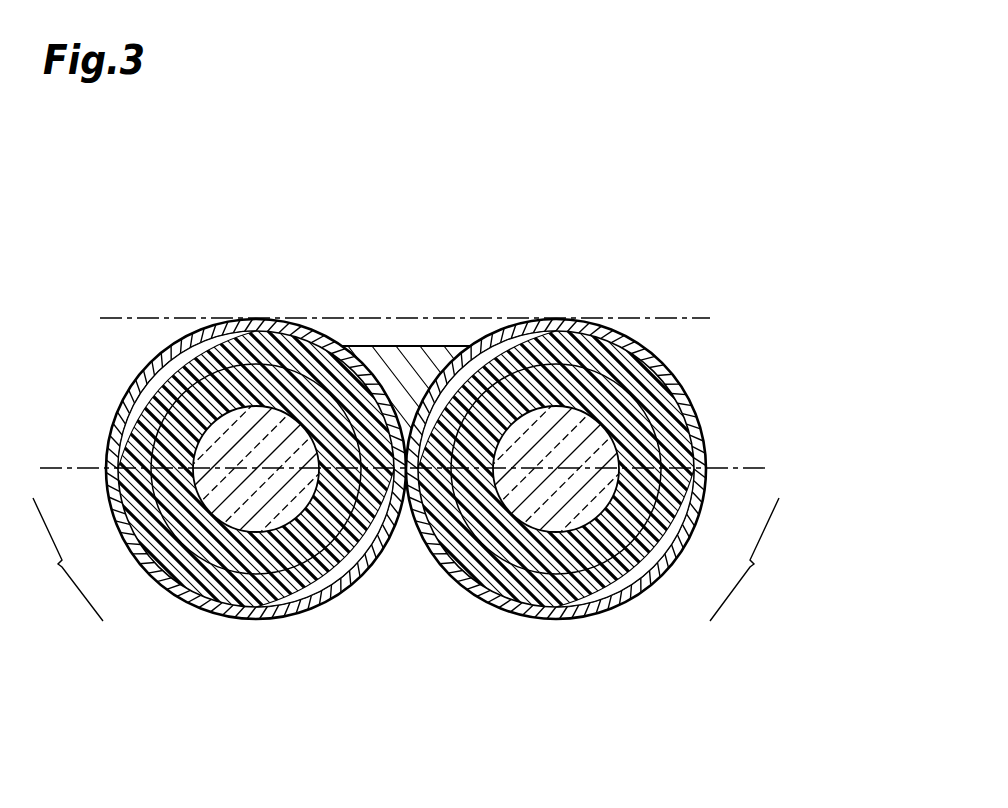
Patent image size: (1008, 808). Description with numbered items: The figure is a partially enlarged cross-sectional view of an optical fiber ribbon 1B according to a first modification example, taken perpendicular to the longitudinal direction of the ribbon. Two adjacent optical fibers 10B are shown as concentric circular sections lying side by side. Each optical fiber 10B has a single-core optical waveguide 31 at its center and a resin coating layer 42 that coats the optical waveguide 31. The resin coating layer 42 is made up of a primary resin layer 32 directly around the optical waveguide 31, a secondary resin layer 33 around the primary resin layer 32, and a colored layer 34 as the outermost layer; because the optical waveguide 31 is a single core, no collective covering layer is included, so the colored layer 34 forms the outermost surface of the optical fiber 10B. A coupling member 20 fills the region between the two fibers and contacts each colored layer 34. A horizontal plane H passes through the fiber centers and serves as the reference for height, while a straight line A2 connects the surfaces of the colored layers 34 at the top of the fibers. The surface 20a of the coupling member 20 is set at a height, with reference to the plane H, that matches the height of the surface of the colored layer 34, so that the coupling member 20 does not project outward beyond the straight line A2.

The optical fiber ribbon 1B is at (405, 411).
The optical fiber 10B is at (408, 493).
The coupling member 20 is at (406, 334).
The surface of the coupling member 20a is at (433, 347).
The optical waveguide 31 is at (243, 518).
The primary resin layer 32 is at (183, 540).
The secondary resin layer 33 is at (148, 502).
The colored layer 34 is at (112, 493).
The resin coating layer 42 is at (405, 559).
The straight line A2 is at (657, 318).
The plane H is at (752, 467).